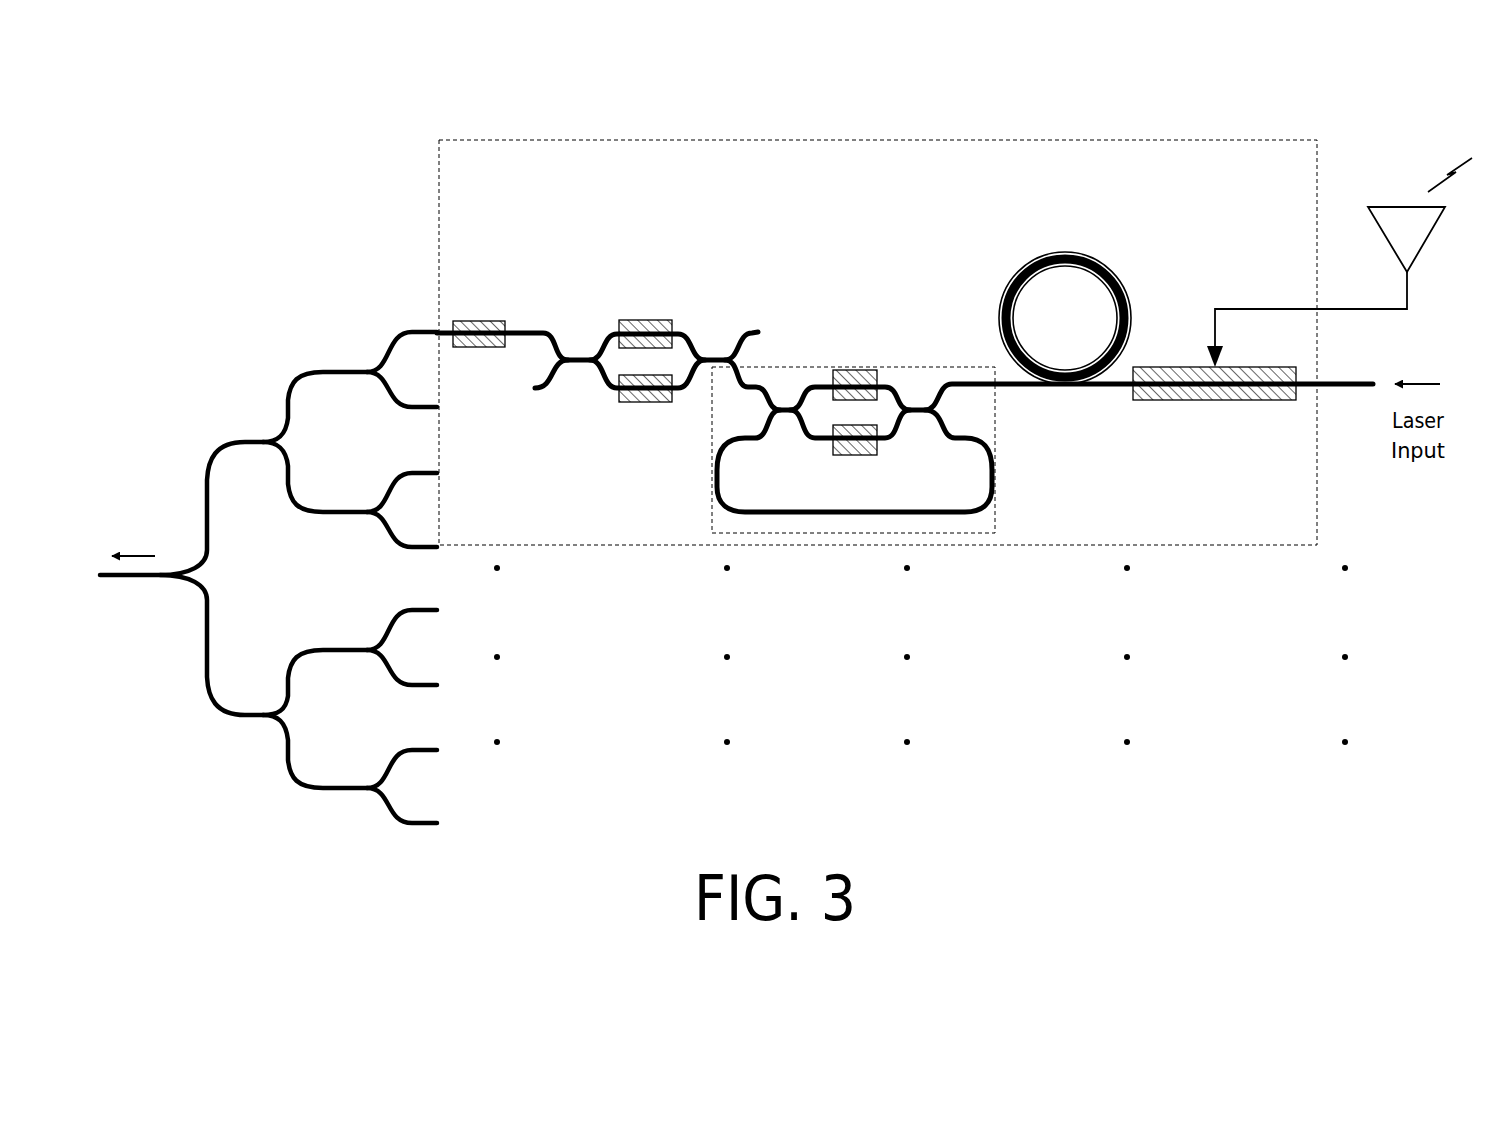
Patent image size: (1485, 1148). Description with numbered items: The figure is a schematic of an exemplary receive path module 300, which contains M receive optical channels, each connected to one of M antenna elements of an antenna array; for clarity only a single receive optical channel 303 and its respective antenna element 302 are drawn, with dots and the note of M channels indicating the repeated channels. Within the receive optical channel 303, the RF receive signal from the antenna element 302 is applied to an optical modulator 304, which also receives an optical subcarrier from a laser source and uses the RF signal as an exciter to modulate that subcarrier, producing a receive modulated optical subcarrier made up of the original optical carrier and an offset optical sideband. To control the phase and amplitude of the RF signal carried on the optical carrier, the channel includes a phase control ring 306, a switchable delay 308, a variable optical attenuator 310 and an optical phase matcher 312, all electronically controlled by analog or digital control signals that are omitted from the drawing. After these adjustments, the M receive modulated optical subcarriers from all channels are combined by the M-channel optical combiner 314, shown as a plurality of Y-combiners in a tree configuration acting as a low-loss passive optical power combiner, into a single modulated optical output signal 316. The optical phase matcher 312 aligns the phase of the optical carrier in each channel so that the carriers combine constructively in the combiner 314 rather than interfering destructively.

The receive path module 300 is at (292, 198).
The antenna element 302 is at (1392, 207).
The receive optical channel 303 is at (782, 197).
The optical modulator 304 is at (1256, 367).
The phase control ring 306 is at (1138, 274).
The switchable delay 308 is at (915, 358).
The variable optical attenuator 310 is at (705, 272).
The optical phase matcher 312 is at (476, 370).
The M-channel optical combiner 314 is at (257, 633).
The modulated optical output signal 316 is at (140, 616).